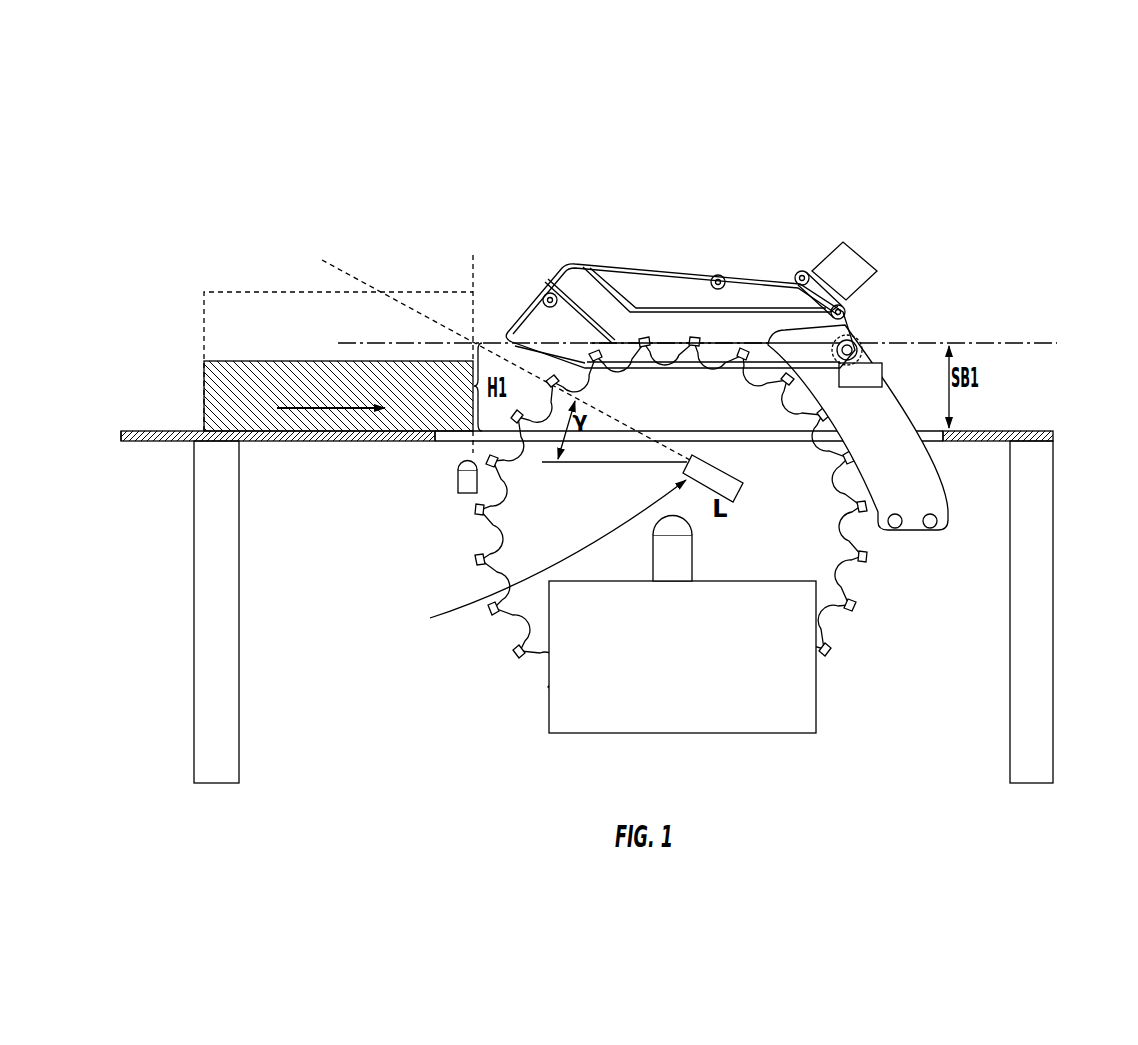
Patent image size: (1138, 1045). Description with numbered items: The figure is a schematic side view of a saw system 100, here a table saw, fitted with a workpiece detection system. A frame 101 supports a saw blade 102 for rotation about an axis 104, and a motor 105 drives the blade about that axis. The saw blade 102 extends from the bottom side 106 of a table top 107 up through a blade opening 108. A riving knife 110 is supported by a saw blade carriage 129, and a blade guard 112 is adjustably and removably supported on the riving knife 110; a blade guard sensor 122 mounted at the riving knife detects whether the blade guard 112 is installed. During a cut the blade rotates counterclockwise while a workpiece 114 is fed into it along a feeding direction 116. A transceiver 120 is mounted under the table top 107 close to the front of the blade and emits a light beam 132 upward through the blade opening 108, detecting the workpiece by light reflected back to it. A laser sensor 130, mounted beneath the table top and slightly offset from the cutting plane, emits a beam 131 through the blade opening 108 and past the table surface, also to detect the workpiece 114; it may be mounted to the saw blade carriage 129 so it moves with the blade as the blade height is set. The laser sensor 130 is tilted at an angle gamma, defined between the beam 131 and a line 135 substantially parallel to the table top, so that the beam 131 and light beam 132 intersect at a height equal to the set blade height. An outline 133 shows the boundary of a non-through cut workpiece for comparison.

The saw system 100 is at (955, 236).
The frame 101 is at (225, 633).
The saw blade 102 is at (530, 663).
The axis 104 is at (667, 526).
The motor 105 is at (752, 715).
The bottom side 106 is at (147, 444).
The table top 107 is at (1047, 430).
The blade opening 108 is at (434, 450).
The riving knife 110 is at (910, 536).
The blade guard 112 is at (639, 296).
The workpiece 114 is at (273, 358).
The feeding direction 116 is at (337, 417).
The transceiver 120 is at (447, 478).
The blade guard sensor 122 is at (876, 368).
The saw blade carriage 129 is at (680, 558).
The laser sensor 130 is at (462, 601).
The beam 131 is at (405, 305).
The light beam 132 is at (476, 272).
The outline 133 is at (212, 290).
The line 135 is at (594, 463).